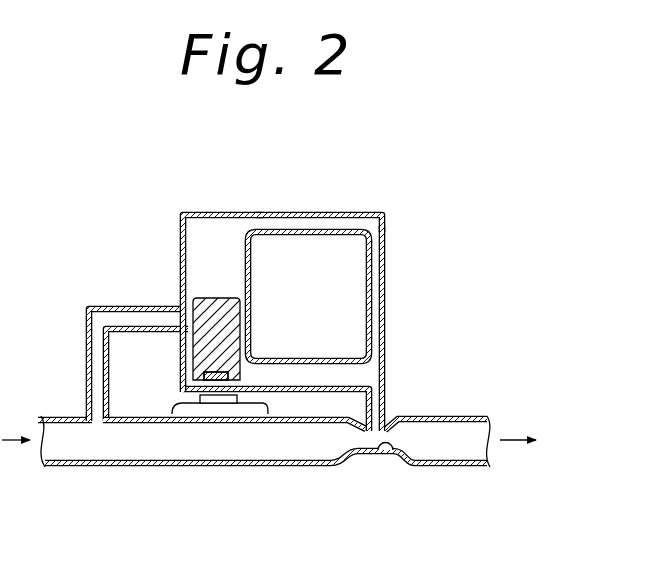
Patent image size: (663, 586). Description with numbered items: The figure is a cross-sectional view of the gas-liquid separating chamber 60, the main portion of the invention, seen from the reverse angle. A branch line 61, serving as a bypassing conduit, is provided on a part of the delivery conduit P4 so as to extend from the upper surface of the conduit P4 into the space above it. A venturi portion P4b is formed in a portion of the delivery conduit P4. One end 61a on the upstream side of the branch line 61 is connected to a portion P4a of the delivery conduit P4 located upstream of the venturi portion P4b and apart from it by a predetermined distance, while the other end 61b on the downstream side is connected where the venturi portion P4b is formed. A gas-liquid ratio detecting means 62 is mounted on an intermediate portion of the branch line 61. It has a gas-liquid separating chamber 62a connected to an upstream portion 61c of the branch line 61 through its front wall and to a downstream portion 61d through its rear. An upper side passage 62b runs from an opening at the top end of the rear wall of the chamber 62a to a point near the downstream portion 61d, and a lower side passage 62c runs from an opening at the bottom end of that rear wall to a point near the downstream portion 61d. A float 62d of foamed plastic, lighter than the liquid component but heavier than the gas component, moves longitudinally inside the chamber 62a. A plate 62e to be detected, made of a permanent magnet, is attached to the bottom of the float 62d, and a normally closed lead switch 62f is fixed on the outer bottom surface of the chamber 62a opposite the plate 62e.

The gas-liquid separating chamber 60 is at (110, 236).
The branch line 61 is at (402, 365).
The one end of branch line 61a is at (84, 416).
The other end of branch line 61b is at (353, 430).
The upstream portion of branch line 61c is at (84, 362).
The downstream portion of branch line 61d is at (393, 388).
The gas-liquid ratio detecting means 62 is at (378, 199).
The gas-liquid separating chamber 62a is at (222, 228).
The upper side passage 62b is at (316, 223).
The lower side passage 62c is at (322, 364).
The float 62d is at (210, 313).
The plate to be detected 62e is at (191, 360).
The lead switch 62f is at (218, 406).
The delivery conduit P4 is at (59, 471).
The portion of delivery conduit P4a is at (99, 422).
The venturi portion P4b is at (390, 455).